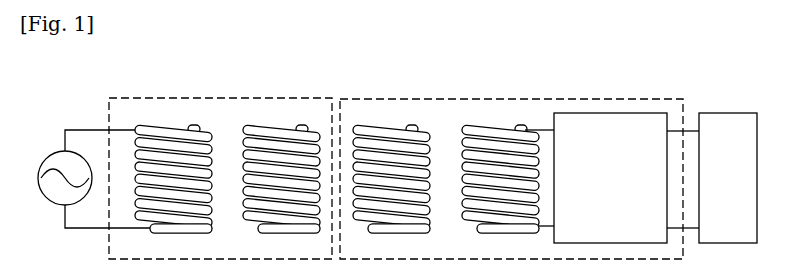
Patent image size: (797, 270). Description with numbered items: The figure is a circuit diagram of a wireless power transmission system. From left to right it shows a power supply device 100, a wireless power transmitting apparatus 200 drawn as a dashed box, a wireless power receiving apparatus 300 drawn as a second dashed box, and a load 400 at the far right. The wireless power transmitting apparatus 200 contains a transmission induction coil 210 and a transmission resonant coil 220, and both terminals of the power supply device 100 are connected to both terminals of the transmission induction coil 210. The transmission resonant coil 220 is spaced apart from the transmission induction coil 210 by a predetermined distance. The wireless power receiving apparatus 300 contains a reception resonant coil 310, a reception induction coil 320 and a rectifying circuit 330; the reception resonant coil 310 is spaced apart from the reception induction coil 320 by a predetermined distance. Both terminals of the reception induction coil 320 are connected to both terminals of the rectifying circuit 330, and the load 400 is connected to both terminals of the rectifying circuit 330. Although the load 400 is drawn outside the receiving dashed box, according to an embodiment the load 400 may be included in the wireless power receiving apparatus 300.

The power supply device 100 is at (46, 156).
The wireless power transmitting apparatus 200 is at (128, 97).
The transmission induction coil 210 is at (183, 138).
The transmission resonant coil 220 is at (282, 138).
The wireless power receiving apparatus 300 is at (434, 98).
The reception resonant coil 310 is at (387, 137).
The reception induction coil 320 is at (507, 137).
The rectifying circuit 330 is at (617, 112).
The load 400 is at (727, 112).